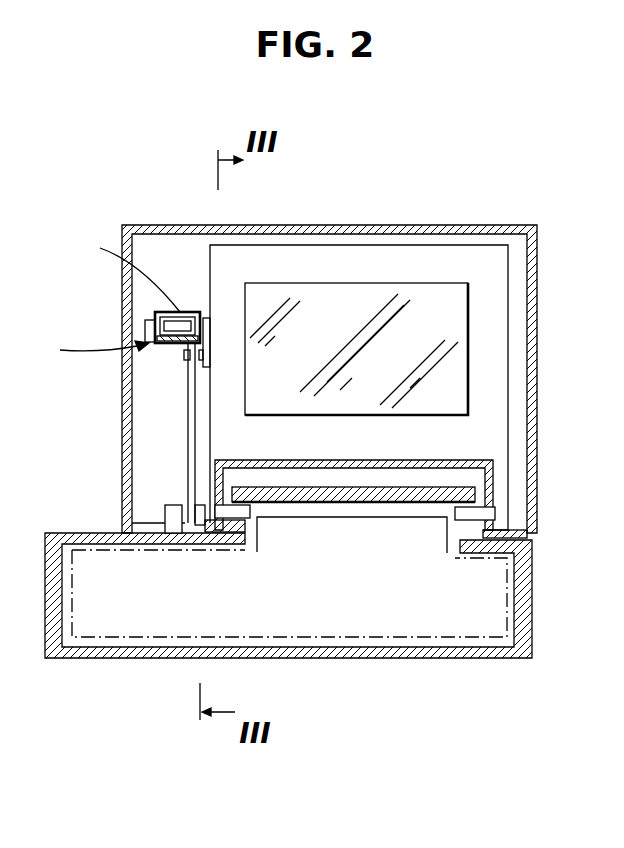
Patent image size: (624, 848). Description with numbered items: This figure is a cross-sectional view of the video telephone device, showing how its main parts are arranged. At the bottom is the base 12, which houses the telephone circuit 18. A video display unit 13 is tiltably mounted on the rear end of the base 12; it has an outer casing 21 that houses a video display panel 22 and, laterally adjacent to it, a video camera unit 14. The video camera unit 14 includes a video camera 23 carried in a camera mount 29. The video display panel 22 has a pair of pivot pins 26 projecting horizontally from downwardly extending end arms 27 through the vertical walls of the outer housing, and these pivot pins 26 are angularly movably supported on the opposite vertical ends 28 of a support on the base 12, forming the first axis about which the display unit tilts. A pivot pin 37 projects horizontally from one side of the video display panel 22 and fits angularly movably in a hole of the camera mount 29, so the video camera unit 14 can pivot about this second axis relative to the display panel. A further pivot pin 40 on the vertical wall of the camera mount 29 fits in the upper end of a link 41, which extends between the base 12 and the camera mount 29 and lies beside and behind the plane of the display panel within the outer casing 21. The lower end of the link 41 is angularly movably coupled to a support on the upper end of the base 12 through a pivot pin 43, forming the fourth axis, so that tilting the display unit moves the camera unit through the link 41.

The base 12 is at (288, 652).
The video display unit 13 is at (539, 247).
The video camera unit 14 is at (85, 349).
The telephone circuit 18 is at (92, 640).
The outer casing 21 is at (369, 377).
The video display panel 22 is at (510, 322).
The video camera 23 is at (127, 269).
The pivot pins 26 is at (258, 515).
The end arms 27 is at (215, 492).
The vertical ends 28 is at (260, 528).
The camera mount 29 is at (150, 326).
The pivot pin 37 is at (212, 362).
The pivot pin 40 is at (185, 357).
The link 41 is at (188, 430).
The pivot pin 43 is at (197, 522).